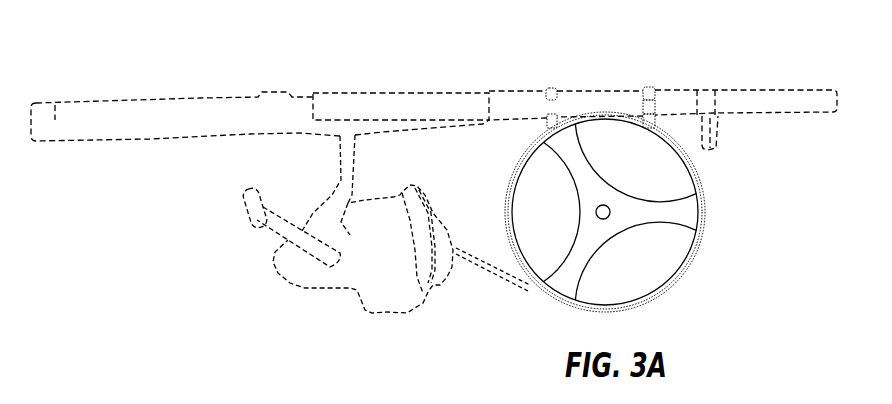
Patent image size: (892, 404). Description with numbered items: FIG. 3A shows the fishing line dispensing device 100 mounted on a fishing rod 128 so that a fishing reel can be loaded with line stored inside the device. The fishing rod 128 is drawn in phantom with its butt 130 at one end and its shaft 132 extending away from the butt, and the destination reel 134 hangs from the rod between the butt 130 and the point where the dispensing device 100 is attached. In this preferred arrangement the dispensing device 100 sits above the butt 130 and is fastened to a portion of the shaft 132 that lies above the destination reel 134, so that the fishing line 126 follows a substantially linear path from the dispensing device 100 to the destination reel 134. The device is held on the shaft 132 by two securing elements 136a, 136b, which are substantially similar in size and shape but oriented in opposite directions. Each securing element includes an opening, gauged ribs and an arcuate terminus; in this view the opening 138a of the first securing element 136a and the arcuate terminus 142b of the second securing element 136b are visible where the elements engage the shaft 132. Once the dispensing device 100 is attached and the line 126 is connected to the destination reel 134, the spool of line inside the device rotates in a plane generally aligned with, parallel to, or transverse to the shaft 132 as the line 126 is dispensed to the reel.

The fishing line dispensing device 100 is at (717, 273).
The fishing line 126 is at (489, 278).
The fishing rod 128 is at (243, 73).
The butt 130 is at (80, 162).
The shaft 132 is at (780, 100).
The destination reel 134 is at (378, 312).
The securing element 136a is at (552, 97).
The securing element 136b is at (651, 88).
The opening 138a is at (557, 108).
The arcuate terminus 142b is at (645, 110).